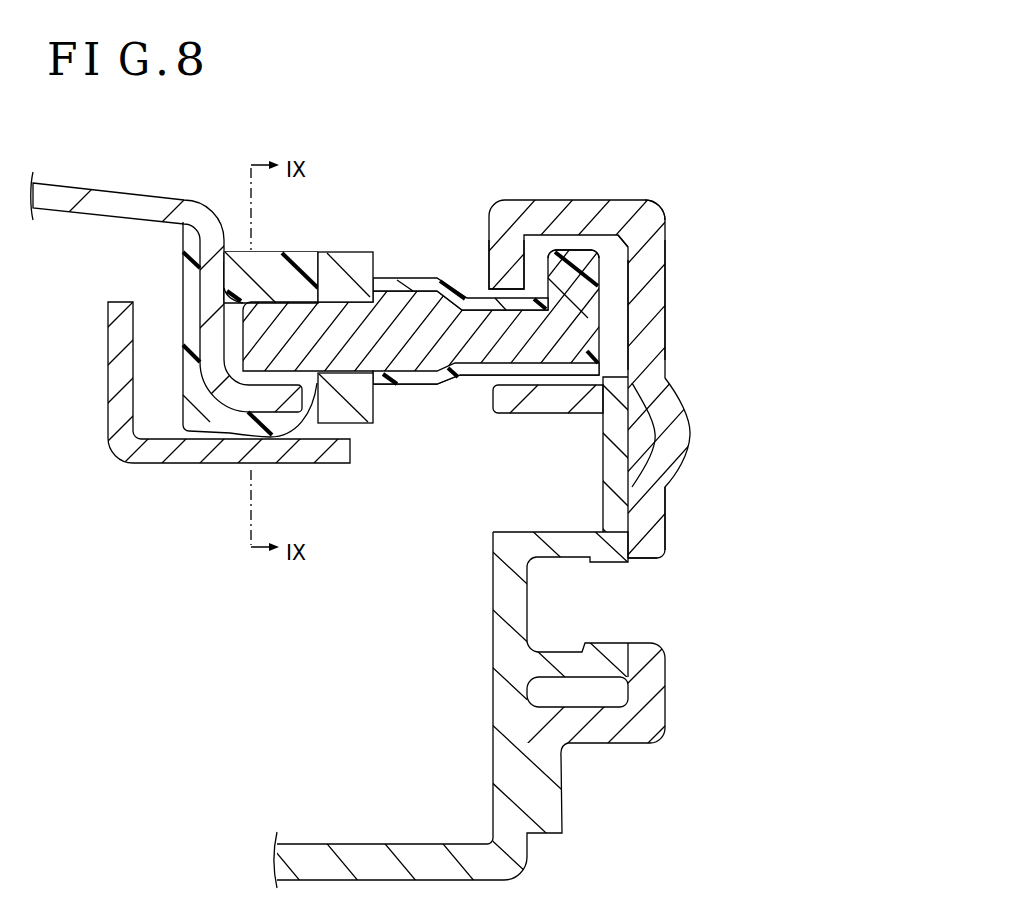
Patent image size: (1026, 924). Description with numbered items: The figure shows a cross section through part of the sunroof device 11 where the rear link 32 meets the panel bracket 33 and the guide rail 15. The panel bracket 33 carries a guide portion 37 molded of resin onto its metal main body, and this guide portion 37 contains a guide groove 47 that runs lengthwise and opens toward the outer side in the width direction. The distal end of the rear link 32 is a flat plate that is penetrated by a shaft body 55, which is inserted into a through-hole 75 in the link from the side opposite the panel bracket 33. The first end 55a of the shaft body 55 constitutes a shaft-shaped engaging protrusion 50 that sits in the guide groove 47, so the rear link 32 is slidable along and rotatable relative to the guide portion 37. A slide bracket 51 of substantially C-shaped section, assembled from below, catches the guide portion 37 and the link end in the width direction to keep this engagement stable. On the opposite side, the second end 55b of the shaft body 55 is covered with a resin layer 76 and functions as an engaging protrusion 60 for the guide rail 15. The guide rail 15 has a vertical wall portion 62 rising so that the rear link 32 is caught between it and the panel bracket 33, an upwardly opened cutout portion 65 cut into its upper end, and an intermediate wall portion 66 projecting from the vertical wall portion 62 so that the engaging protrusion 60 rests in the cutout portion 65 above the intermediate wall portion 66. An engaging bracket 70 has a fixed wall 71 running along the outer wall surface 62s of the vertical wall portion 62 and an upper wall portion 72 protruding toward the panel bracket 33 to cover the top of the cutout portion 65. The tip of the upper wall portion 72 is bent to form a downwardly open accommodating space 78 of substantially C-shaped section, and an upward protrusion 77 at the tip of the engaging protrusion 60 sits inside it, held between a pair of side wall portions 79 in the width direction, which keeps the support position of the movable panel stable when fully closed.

The sunroof device 11 is at (755, 122).
The guide rail 15 is at (307, 844).
The rear link 32 is at (347, 252).
The panel bracket 33 is at (68, 183).
The guide portion 37 is at (238, 252).
The guide groove 47 is at (287, 303).
The engaging protrusion 50 is at (224, 287).
The slide bracket 51 is at (117, 440).
The shaft body 55 is at (414, 291).
The first end 55a is at (252, 337).
The second end 55b is at (588, 338).
The engaging protrusion 60 is at (630, 312).
The vertical wall portion 62 is at (622, 471).
The outer wall surface 62s is at (633, 558).
The cutout portion 65 is at (610, 378).
The intermediate wall portion 66 is at (548, 400).
The engaging bracket 70 is at (665, 206).
The fixed wall 71 is at (660, 518).
The upper wall portion 72 is at (542, 212).
The through-hole 75 is at (354, 408).
The resin layer 76 is at (476, 368).
The upward protrusion 77 is at (577, 262).
The accommodating space 78 is at (497, 258).
The side wall portions 79 is at (666, 255).